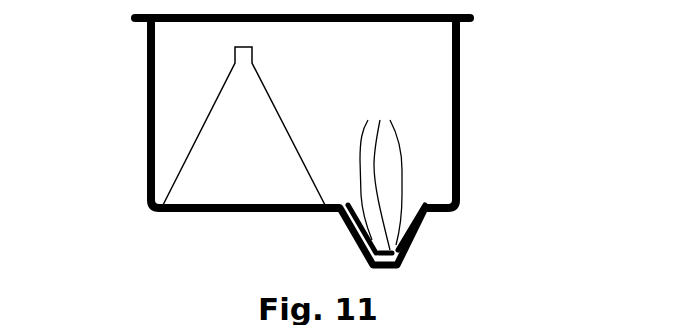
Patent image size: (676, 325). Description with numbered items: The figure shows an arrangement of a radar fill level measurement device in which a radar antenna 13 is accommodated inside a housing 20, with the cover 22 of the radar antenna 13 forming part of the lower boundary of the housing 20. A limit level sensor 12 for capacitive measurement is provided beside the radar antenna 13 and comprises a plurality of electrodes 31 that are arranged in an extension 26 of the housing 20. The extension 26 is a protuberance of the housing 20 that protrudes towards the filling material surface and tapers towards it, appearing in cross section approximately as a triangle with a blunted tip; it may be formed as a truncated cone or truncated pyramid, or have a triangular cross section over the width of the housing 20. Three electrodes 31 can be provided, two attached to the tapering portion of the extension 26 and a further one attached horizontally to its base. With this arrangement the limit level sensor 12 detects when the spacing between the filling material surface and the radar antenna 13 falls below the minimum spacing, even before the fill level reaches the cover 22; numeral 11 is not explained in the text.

The evaporation chamber 11 is at (214, 88).
The limit level sensor 12 is at (411, 177).
The radar antenna 13 is at (222, 134).
The housing 20 is at (460, 82).
The cover 22 is at (196, 212).
The extension 26 is at (445, 229).
The electrodes 31 is at (381, 173).